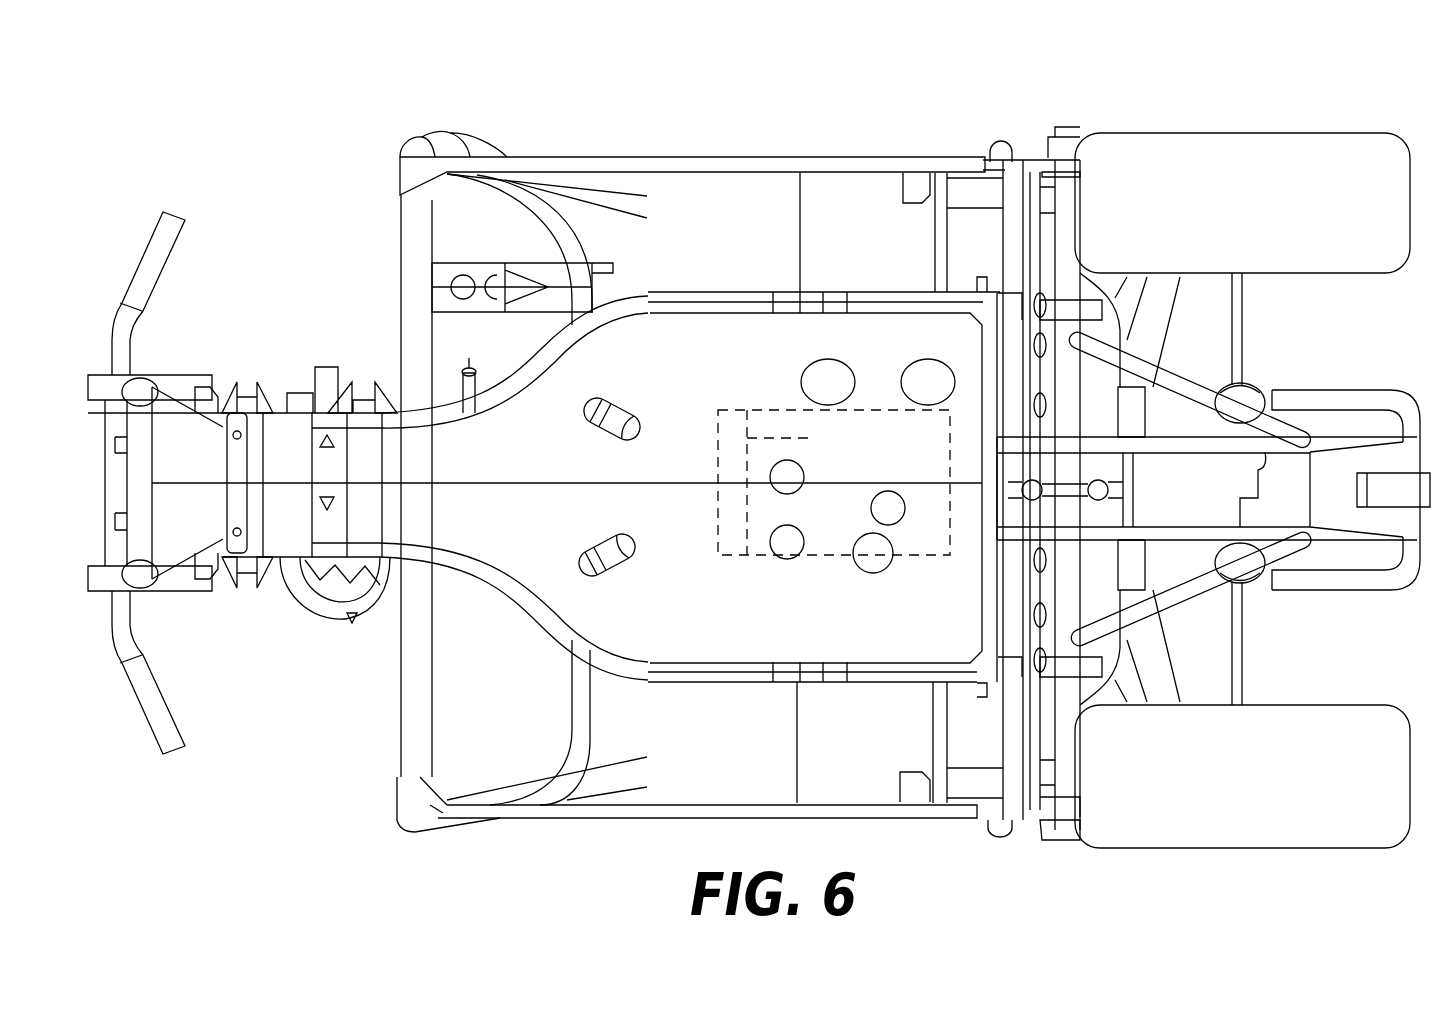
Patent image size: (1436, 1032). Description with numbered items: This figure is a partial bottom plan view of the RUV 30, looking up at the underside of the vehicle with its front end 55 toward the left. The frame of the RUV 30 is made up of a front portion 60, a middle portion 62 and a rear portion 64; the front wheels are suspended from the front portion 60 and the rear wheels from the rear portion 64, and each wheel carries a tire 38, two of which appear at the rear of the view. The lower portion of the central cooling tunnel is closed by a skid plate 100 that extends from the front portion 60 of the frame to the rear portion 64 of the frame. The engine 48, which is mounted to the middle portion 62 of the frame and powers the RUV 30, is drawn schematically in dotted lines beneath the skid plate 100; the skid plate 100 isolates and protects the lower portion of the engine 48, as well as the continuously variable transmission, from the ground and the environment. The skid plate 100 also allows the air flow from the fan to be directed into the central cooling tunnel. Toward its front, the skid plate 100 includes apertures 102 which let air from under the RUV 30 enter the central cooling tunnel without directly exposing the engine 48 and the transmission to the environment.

The RUV 30 is at (364, 100).
The tire 38 is at (1215, 133).
The engine 48 is at (885, 425).
The front end 55 is at (235, 348).
The front portion 60 is at (308, 582).
The middle portion 62 is at (745, 157).
The rear portion 64 is at (1162, 533).
The skid plate 100 is at (690, 365).
The apertures 102 is at (613, 420).